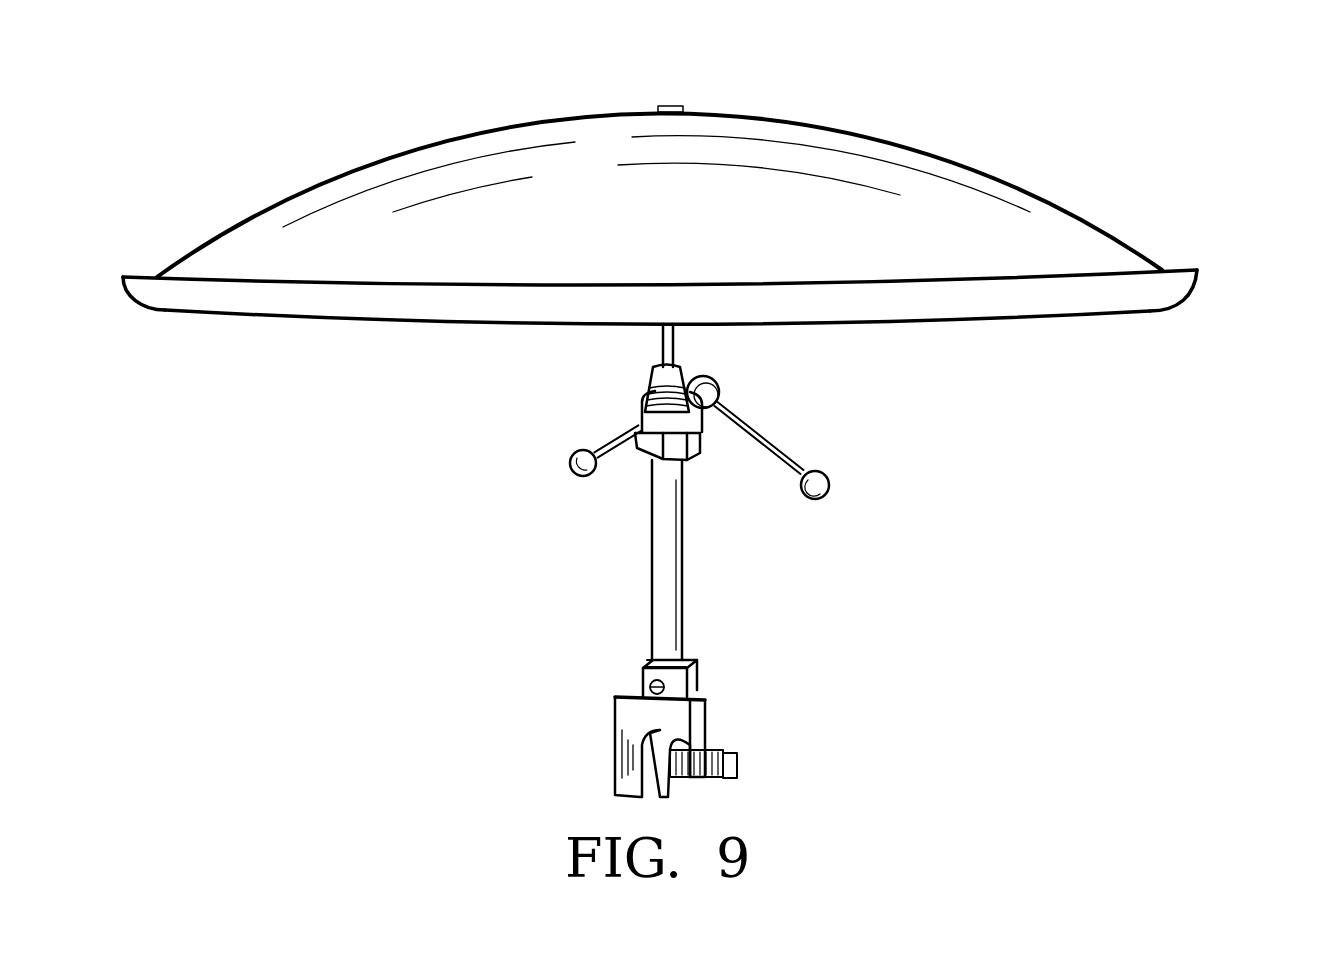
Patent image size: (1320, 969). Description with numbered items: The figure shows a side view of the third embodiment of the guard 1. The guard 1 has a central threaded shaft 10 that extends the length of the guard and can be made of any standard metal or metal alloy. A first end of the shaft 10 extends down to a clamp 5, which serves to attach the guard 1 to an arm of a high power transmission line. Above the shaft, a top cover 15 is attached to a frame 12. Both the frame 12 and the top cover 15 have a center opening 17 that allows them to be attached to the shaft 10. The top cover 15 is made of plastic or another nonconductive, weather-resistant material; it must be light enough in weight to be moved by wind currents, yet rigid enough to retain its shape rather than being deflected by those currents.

The guard 1 is at (702, 189).
The clamp 5 is at (695, 723).
The central threaded shaft 10 is at (668, 563).
The frame 12 is at (1137, 288).
The top cover 15 is at (1055, 225).
The center opening 17 is at (672, 106).